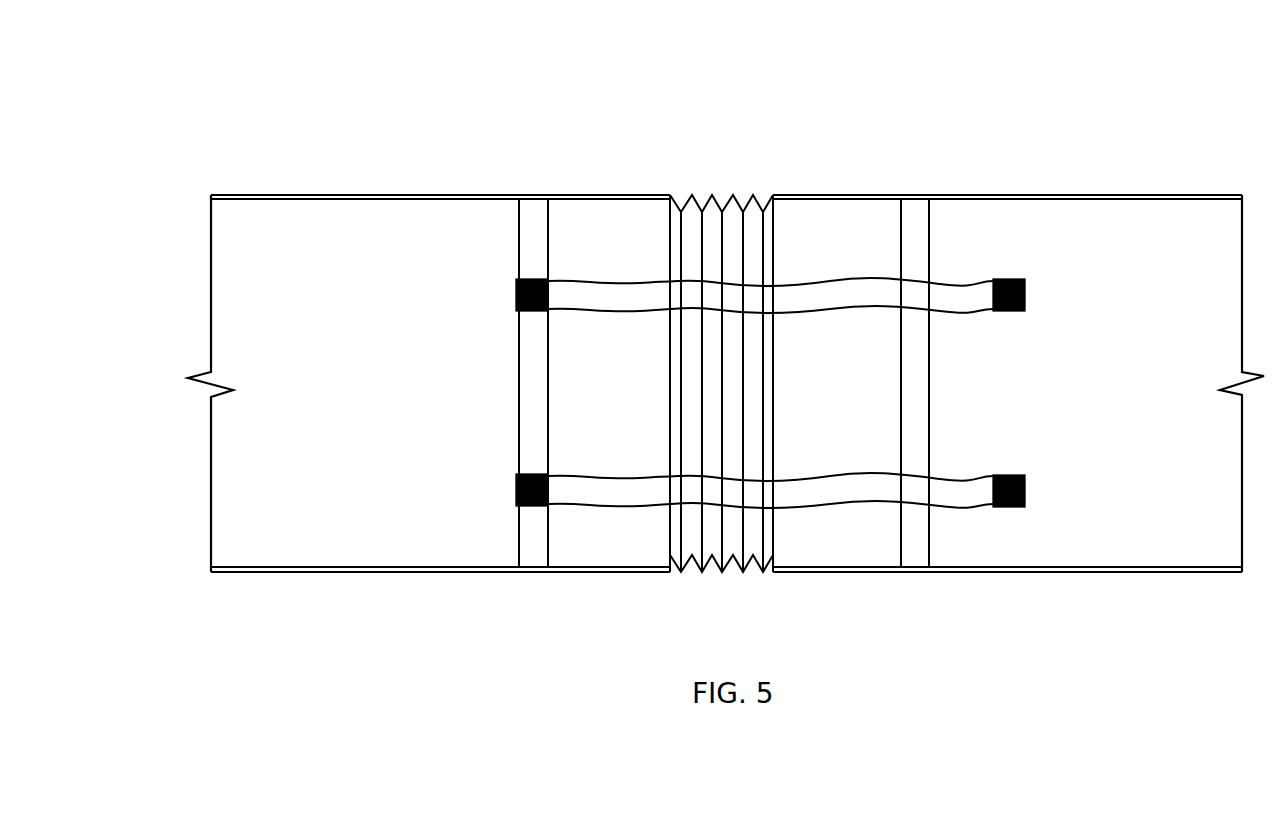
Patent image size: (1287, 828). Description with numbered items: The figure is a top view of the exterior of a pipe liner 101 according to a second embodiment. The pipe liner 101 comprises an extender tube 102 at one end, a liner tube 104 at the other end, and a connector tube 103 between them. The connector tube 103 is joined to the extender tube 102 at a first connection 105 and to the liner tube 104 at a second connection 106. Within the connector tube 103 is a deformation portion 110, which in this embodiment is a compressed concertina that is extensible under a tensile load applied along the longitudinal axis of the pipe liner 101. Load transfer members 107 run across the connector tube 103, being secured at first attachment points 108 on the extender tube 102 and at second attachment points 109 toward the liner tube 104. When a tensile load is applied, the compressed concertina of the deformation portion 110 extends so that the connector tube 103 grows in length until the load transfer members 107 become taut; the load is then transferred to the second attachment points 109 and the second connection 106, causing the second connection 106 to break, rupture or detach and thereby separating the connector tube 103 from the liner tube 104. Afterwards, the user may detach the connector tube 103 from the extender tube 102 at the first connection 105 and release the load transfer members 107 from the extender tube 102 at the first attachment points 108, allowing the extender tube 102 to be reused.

The pipe liner 101 is at (325, 68).
The extender tube 102 is at (1176, 215).
The connector tube 103 is at (862, 215).
The liner tube 104 is at (226, 263).
The first connection 105 is at (913, 572).
The second connection 106 is at (532, 572).
The load transfer members 107 is at (800, 280).
The first attachment points 108 is at (1025, 295).
The second attachment points 109 is at (516, 295).
The deformation portion 110 is at (702, 208).